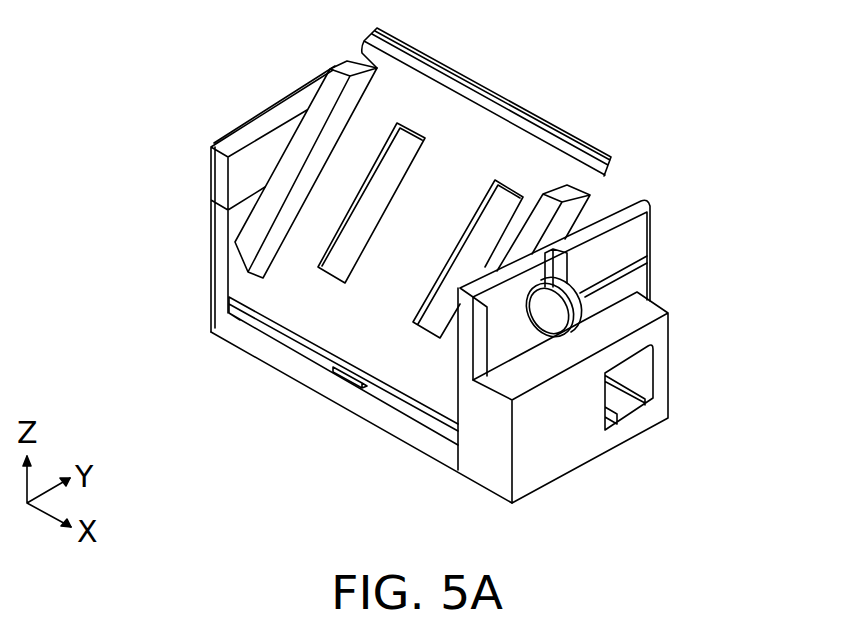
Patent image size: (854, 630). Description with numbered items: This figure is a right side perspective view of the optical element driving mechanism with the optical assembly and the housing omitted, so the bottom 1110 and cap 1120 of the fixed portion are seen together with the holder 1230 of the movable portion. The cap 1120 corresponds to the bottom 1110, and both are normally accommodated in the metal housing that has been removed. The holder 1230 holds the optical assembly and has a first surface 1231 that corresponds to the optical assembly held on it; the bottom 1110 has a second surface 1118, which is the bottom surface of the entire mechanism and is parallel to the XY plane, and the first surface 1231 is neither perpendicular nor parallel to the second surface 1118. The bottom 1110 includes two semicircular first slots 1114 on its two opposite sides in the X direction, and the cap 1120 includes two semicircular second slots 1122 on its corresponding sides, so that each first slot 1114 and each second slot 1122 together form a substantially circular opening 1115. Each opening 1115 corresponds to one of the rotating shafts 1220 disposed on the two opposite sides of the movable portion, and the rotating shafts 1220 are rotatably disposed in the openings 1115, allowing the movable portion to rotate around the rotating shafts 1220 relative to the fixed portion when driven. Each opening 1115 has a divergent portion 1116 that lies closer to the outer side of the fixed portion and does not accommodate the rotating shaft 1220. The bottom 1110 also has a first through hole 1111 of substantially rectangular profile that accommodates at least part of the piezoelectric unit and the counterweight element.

The bottom 1110 is at (573, 440).
The first through hole 1111 is at (647, 373).
The first slot 1114 is at (528, 318).
The opening 1115 is at (553, 290).
The divergent portion 1116 is at (642, 260).
The second surface 1118 is at (297, 357).
The cap 1120 is at (628, 243).
The second slot 1122 is at (537, 322).
The rotating shaft 1220 is at (578, 312).
The holder 1230 is at (472, 81).
The first surface 1231 is at (523, 167).